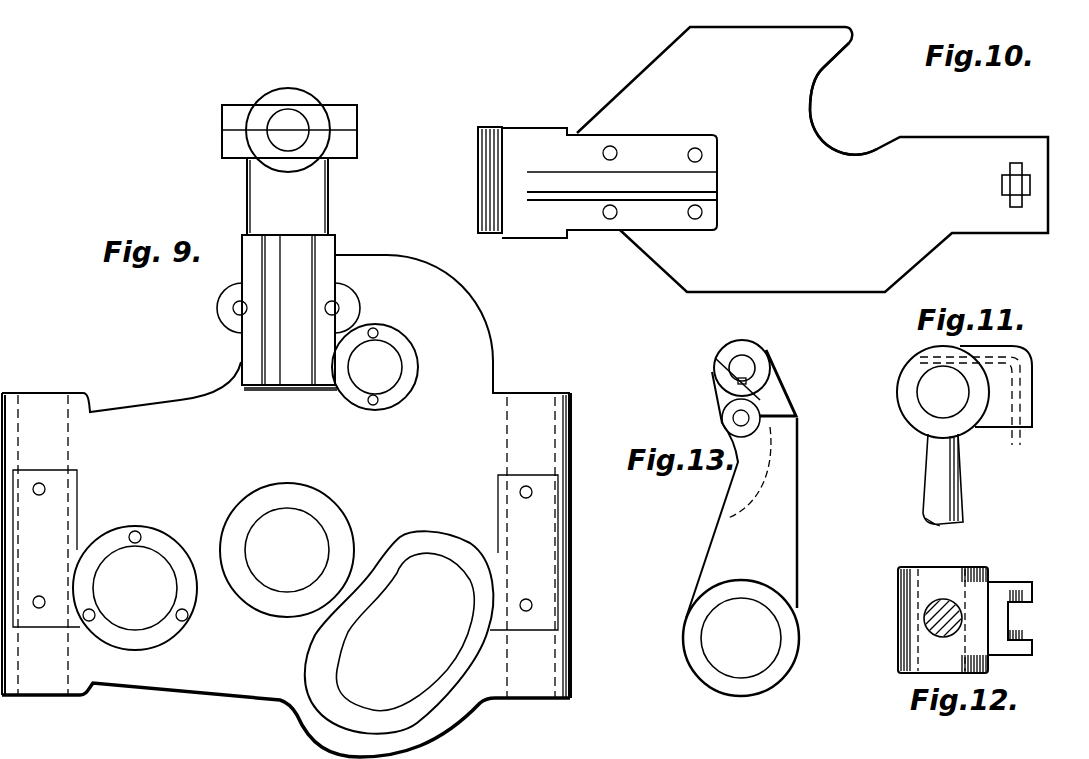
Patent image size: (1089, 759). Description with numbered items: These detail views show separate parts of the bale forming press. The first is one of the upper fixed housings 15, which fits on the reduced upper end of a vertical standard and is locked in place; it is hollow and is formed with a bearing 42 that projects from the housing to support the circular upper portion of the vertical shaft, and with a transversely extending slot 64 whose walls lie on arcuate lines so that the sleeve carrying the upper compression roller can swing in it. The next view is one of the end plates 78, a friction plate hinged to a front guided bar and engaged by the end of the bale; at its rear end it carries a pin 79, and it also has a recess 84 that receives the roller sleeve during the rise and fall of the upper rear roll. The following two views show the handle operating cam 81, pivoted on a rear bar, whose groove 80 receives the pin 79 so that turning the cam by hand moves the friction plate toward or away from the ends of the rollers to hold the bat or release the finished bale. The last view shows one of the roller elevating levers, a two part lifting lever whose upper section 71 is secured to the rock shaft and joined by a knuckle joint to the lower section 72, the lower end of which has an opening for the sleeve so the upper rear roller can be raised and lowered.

In FIG. 9, the housing 15 is at (286, 506).
In FIG. 9, the bearing 42 is at (262, 343).
In FIG. 9, the transversely extending slot 64 is at (407, 557).
In FIG. 10, the end plate 78 is at (763, 159).
In FIG. 10, the pin 79 is at (1016, 207).
In FIG. 10, the recess 84 is at (813, 94).
In FIG. 11, the groove 80 is at (1016, 430).
In FIG. 12, the groove 80 is at (1012, 607).
In FIG. 11, the handle operating cam 81 is at (932, 441).
In FIG. 12, the handle operating cam 81 is at (924, 625).
In FIG. 13, the upper section of lifting lever 71 is at (777, 398).
In FIG. 13, the lower section of lifting lever 72 is at (741, 523).